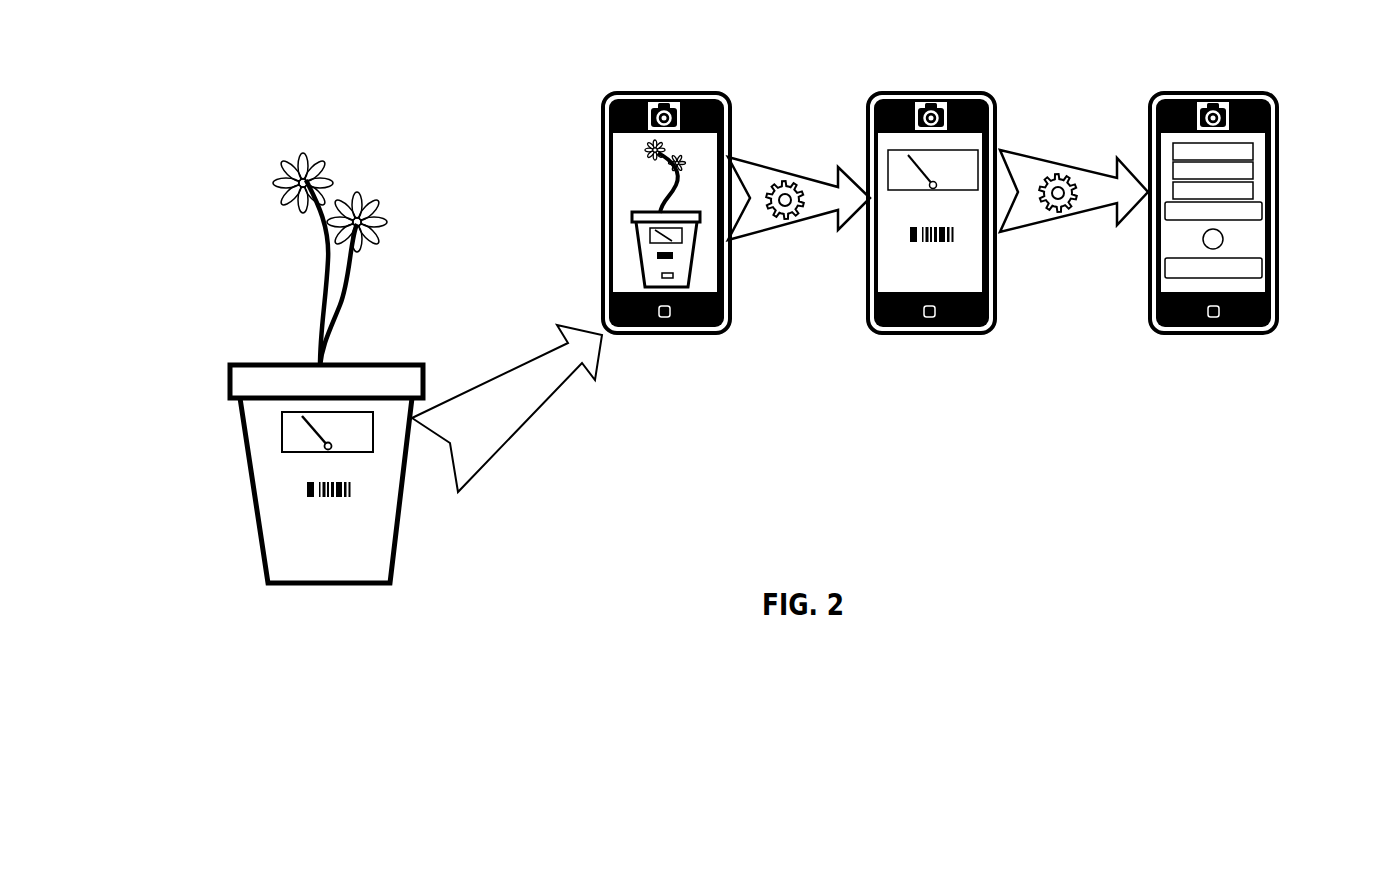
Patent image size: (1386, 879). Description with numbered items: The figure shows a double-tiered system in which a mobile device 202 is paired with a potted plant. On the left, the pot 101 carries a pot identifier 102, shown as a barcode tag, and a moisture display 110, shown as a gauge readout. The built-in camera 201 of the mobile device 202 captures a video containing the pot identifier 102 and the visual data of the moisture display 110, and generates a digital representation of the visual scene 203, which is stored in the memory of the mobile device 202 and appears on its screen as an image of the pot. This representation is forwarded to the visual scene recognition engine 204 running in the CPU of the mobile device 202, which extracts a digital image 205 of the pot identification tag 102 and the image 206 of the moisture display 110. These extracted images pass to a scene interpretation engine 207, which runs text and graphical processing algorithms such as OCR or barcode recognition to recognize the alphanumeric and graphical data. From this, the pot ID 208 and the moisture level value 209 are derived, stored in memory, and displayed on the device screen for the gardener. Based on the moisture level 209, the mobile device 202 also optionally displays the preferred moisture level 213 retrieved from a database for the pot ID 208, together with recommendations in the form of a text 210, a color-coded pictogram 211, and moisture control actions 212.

The pot 101 is at (257, 535).
The pot identifier 102 is at (305, 485).
The moisture display 110 is at (328, 412).
The built-in camera 201 is at (662, 103).
The mobile device 202 is at (614, 175).
The digital representation of the visual scene 203 is at (650, 235).
The visual scene recognition engine 204 is at (786, 219).
The digital image of the pot identification tag 205 is at (953, 235).
The image of the moisture display 206 is at (888, 172).
The scene interpretation engine 207 is at (1059, 213).
The pot ID 208 is at (1173, 152).
The moisture level value 209 is at (1253, 172).
The preferred moisture level 213 is at (1253, 190).
The text recommendation 210 is at (1263, 211).
The color-coded pictogram 211 is at (1224, 240).
The moisture control actions 212 is at (1215, 279).